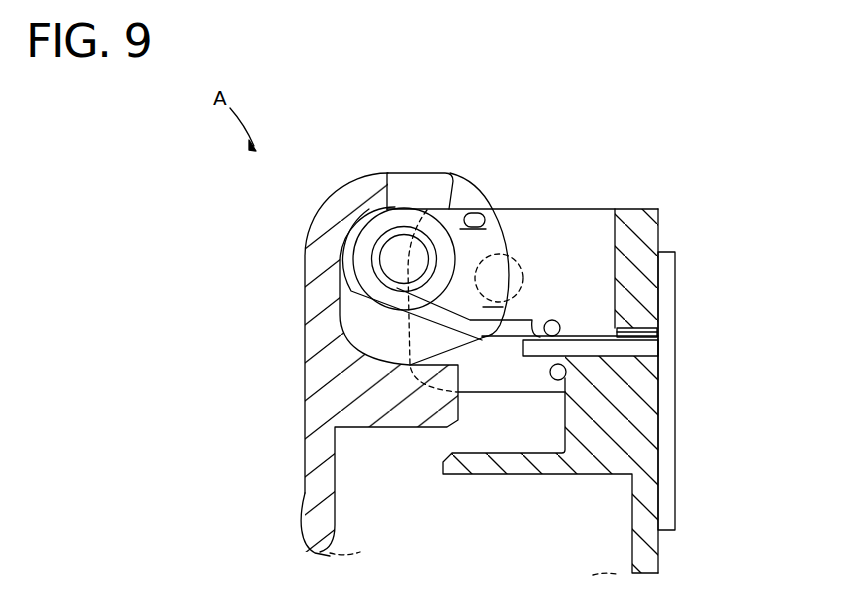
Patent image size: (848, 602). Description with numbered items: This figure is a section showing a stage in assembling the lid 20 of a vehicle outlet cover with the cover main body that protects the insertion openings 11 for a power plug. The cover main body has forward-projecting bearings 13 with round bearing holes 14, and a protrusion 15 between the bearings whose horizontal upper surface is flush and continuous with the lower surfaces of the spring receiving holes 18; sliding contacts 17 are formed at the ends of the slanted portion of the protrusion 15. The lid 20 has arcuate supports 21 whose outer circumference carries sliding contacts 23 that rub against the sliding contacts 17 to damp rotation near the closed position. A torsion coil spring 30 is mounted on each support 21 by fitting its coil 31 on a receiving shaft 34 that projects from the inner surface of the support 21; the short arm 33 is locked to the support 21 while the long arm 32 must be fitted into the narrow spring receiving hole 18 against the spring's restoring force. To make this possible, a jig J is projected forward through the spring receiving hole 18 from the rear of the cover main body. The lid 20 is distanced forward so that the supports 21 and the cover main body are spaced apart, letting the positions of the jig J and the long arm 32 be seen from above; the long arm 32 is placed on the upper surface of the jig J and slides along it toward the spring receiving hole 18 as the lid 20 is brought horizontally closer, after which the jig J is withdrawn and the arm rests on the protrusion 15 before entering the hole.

The insertion openings 11 is at (647, 495).
The bearings 13 is at (427, 380).
The bearing holes 14 is at (526, 262).
The protrusion 15 is at (573, 413).
The sliding contacts 17 is at (567, 383).
The spring receiving holes 18 is at (613, 348).
The lid 20 is at (313, 494).
The supports 21 is at (462, 193).
The sliding contacts 23 is at (503, 300).
The torsion coil spring 30 is at (357, 285).
The coil 31 is at (367, 235).
The long arm 32 is at (545, 318).
The short arm 33 is at (472, 214).
The receiving shaft 34 is at (393, 257).
The jig J is at (635, 318).